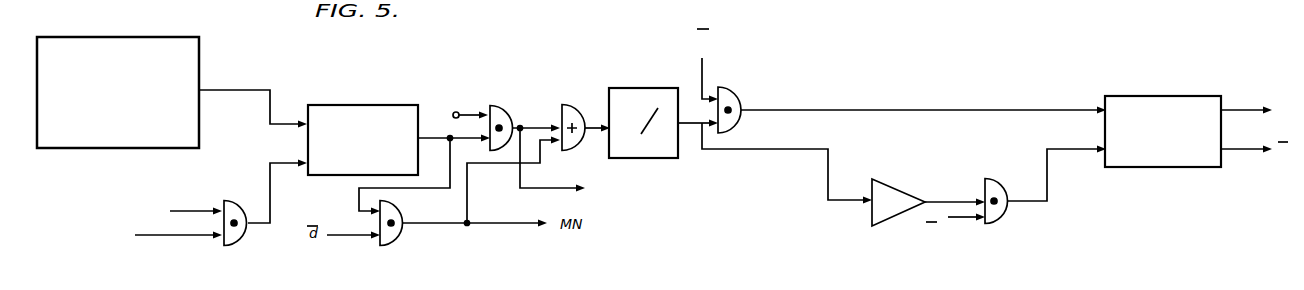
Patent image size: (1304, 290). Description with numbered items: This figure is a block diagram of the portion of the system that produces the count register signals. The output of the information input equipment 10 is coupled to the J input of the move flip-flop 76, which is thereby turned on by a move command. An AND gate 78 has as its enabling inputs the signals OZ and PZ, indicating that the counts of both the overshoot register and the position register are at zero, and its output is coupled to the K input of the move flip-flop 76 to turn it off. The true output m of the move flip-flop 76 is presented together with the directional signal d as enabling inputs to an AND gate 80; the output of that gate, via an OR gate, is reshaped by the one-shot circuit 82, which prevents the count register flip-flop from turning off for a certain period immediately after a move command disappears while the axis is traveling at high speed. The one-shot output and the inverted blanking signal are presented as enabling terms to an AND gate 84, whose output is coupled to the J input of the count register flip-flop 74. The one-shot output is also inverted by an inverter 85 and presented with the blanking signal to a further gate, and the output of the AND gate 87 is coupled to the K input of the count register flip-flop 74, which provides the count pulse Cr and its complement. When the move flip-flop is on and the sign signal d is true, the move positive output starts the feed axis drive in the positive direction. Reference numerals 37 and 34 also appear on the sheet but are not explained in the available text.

The information input equipment 10 is at (185, 36).
The move flip-flop 76 is at (388, 106).
The AND gate 78 is at (232, 248).
The AND gate 80 is at (507, 106).
The one-shot circuit 82 is at (658, 67).
The AND gate 84 is at (731, 86).
The inverter 85 is at (911, 196).
The AND gate 87 is at (995, 222).
The count register flip-flop 74 is at (1196, 100).
The component 37 is at (624, 289).
The component 34 is at (929, 6).